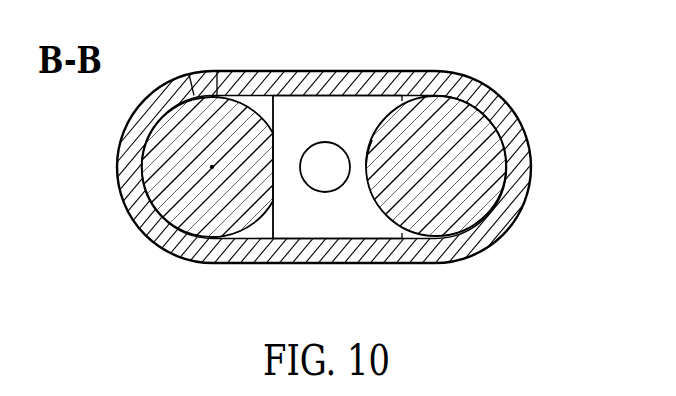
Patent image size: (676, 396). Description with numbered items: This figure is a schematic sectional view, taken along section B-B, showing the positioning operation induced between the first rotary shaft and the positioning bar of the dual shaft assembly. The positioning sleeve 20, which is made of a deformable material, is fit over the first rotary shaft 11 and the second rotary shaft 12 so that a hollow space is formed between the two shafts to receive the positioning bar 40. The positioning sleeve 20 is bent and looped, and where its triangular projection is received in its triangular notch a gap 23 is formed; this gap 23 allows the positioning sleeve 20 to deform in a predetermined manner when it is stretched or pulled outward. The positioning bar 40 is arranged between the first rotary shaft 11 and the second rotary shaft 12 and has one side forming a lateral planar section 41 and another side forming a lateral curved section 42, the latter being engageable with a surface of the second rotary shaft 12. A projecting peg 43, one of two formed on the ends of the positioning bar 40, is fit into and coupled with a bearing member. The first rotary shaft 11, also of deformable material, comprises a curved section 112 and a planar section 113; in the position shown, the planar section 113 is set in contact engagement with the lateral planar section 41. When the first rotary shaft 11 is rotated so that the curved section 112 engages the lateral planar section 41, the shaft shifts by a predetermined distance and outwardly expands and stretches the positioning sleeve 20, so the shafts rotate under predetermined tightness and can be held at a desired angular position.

The first rotary shaft 11 is at (198, 158).
The second rotary shaft 12 is at (453, 160).
The positioning sleeve 20 is at (383, 78).
The gap 23 is at (204, 82).
The positioning bar 40 is at (330, 122).
The lateral planar section 41 is at (275, 170).
The lateral curved section 42 is at (363, 184).
The projecting peg 43 is at (305, 143).
The curved section 112 is at (272, 186).
The planar section 113 is at (269, 237).